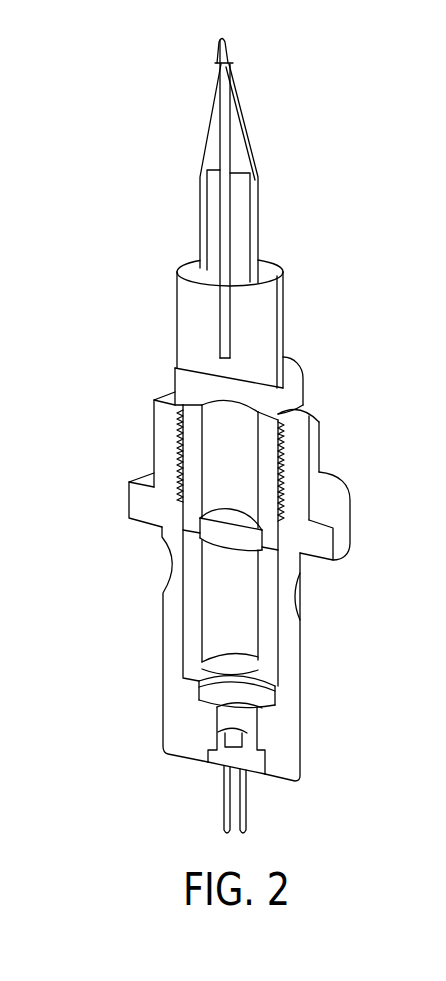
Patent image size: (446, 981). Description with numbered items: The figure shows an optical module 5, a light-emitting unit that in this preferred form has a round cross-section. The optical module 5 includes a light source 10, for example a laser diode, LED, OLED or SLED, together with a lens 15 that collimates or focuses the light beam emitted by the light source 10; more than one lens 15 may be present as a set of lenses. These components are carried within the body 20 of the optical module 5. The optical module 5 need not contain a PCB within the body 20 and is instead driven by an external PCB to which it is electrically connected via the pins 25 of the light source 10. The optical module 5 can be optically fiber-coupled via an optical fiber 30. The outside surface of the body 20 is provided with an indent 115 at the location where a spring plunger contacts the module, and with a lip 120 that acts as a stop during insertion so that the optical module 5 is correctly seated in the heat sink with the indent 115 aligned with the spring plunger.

The optical module 5 is at (384, 369).
The light source 10 is at (259, 781).
The lens 15 is at (256, 505).
The body 20 is at (302, 652).
The pins 25 is at (238, 809).
The optical fiber 30 is at (228, 322).
The indent 115 is at (297, 598).
The lip 120 is at (352, 527).